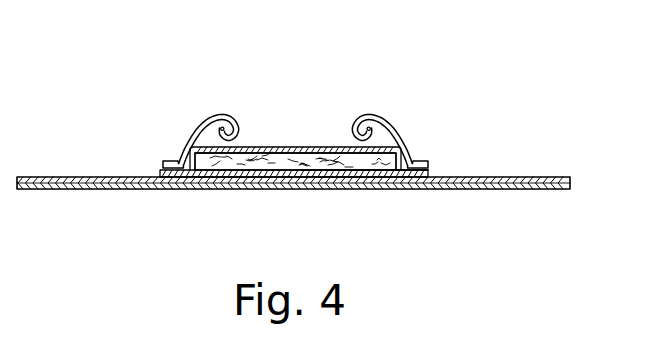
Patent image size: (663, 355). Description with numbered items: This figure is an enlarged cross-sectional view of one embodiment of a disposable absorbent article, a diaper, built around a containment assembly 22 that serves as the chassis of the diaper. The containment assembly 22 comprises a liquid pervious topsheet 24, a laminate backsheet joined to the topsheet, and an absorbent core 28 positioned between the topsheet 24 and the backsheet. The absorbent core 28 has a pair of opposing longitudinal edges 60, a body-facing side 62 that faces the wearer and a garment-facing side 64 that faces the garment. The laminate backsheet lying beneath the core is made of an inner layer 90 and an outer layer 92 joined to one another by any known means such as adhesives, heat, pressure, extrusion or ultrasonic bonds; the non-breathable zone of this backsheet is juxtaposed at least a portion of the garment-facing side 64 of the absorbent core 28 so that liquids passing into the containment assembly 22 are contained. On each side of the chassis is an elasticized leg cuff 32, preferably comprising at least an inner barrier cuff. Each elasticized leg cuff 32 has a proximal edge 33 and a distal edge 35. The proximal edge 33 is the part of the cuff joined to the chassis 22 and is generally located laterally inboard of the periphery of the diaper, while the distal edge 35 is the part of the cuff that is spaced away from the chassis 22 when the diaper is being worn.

The containment assembly 22 is at (295, 80).
The liquid pervious topsheet 24 is at (303, 147).
The absorbent core 28 is at (292, 172).
The elasticized leg cuff 32 is at (190, 134).
The proximal edge 33 is at (166, 166).
The distal edge 35 is at (234, 122).
The longitudinal edges 60 is at (405, 174).
The body-facing side 62 is at (277, 147).
The garment-facing side 64 is at (358, 174).
The inner layer 90 is at (172, 173).
The outer layer 92 is at (228, 174).